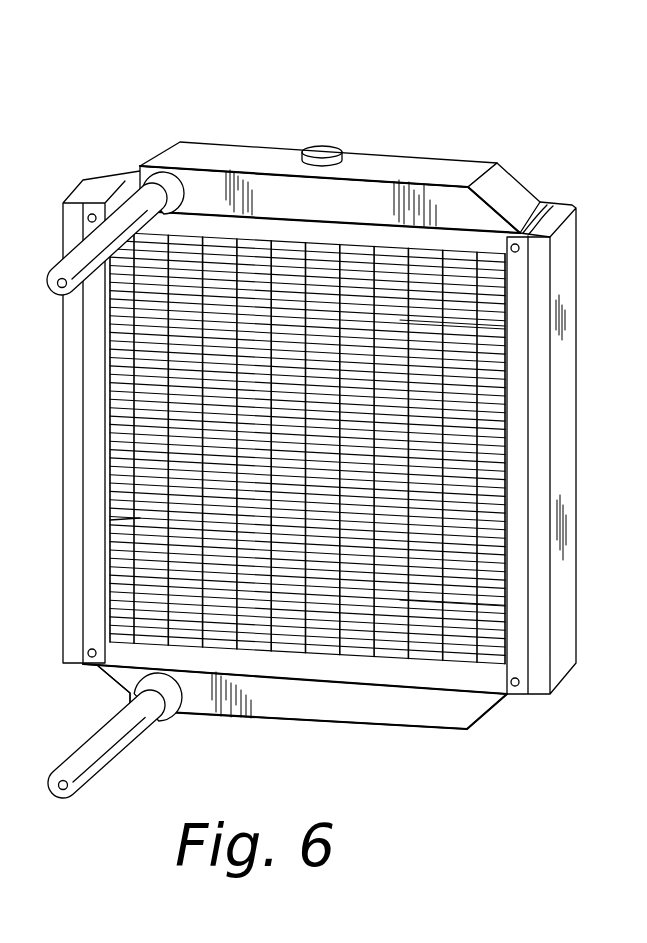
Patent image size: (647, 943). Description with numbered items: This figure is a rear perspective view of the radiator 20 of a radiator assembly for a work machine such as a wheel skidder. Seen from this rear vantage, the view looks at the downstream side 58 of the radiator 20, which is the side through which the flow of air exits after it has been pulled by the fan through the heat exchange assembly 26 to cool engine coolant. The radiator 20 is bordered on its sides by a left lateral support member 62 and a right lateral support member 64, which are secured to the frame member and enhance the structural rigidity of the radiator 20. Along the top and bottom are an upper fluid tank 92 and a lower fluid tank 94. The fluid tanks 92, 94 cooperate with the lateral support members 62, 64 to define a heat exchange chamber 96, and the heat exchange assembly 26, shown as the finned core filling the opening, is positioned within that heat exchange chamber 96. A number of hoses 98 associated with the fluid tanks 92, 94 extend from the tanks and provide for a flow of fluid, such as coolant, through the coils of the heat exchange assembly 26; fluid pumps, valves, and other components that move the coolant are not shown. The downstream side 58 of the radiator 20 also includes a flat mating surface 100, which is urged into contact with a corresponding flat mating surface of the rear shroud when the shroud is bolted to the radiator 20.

The radiator 20 is at (467, 92).
The heat exchange assembly 26 is at (487, 320).
The downstream side 58 is at (481, 468).
The left lateral support member 62 is at (62, 366).
The right lateral support member 64 is at (568, 398).
The upper fluid tank 92 is at (248, 153).
The lower fluid tank 94 is at (426, 729).
The heat exchange chamber 96 is at (148, 517).
The hoses 98 is at (120, 213).
The flat mating surface 100 is at (490, 683).